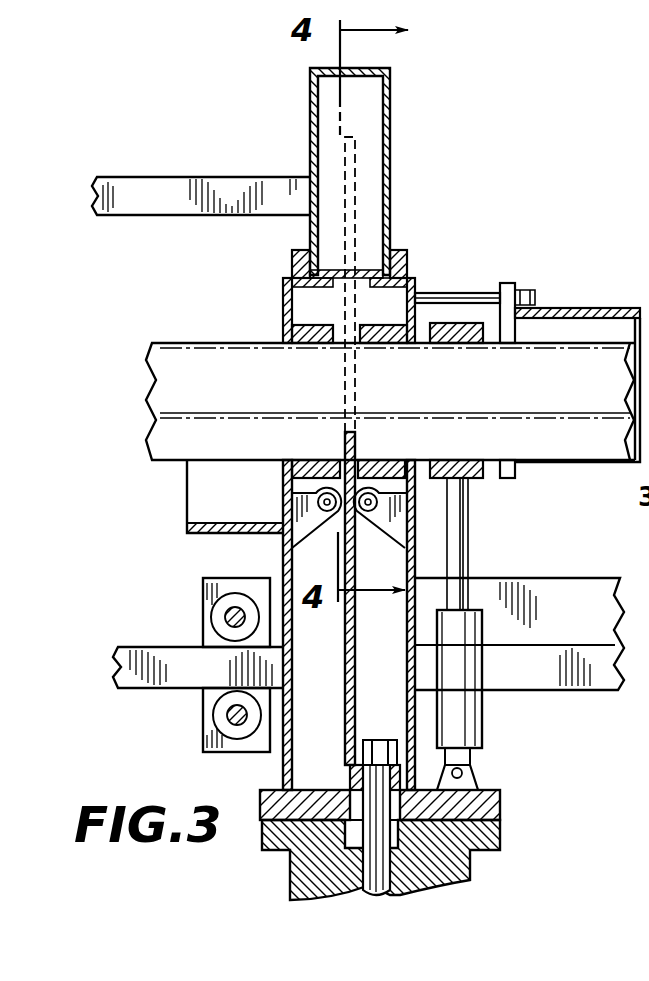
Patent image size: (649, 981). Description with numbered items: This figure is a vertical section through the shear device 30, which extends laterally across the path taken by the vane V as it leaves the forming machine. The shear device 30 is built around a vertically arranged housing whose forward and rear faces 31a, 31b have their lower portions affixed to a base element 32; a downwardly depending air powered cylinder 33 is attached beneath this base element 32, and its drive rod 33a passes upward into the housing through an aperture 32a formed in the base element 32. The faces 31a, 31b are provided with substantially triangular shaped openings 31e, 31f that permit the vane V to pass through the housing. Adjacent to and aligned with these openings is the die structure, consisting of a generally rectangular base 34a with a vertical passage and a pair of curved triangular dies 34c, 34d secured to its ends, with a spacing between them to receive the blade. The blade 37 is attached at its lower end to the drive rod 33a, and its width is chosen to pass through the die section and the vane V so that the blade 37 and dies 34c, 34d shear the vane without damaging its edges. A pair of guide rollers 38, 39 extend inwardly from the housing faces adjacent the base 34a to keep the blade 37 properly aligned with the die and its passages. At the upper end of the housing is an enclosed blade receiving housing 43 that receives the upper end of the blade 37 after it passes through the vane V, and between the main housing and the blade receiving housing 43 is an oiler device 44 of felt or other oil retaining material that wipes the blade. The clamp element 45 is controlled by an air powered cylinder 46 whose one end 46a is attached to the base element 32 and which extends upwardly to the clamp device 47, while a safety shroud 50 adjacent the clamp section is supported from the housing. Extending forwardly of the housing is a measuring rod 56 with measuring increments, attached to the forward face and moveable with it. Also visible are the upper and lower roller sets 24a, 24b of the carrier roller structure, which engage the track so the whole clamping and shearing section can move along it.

The blade receiving housing 43 is at (392, 141).
The measuring rod 56 is at (113, 177).
The oiler device 44 is at (370, 262).
The curved triangular shaped die 34c is at (308, 325).
The curved triangular shaped die 34d is at (385, 325).
The triangular shaped opening 31e is at (283, 340).
The triangular shaped opening 31f is at (455, 323).
The clamp device 47 is at (508, 286).
The safety shroud 50 is at (598, 308).
The vane V is at (170, 343).
The base 34a is at (310, 493).
The forward face 31a is at (283, 562).
The blade 37 is at (356, 684).
The guide roller 38 is at (330, 512).
The guide roller 39 is at (365, 512).
The roller set 24a is at (215, 612).
The roller set 24b is at (215, 722).
The air powered cylinder 46 is at (483, 714).
The end of cylinder 46a is at (470, 780).
The clamp element 45 is at (483, 484).
The shear device 30 is at (505, 775).
The rear face 31b is at (415, 564).
The base element 32 is at (262, 802).
The aperture 32a is at (440, 824).
The power cylinder 33 is at (290, 880).
The drive rod 33a is at (472, 882).